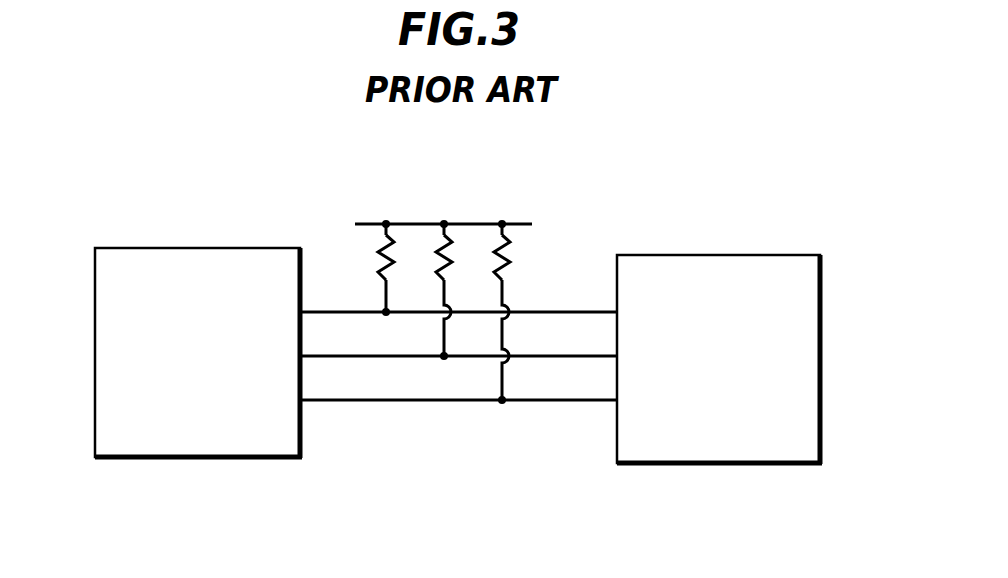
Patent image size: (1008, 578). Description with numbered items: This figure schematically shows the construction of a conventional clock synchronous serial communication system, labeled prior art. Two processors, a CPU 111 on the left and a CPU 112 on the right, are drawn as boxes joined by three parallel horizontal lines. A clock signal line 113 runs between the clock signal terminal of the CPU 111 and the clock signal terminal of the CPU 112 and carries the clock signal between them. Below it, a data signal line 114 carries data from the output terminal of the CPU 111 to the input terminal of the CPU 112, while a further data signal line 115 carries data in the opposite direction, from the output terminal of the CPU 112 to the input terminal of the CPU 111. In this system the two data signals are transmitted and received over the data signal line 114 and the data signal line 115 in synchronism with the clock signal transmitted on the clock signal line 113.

The CPU 111 is at (220, 248).
The CPU 112 is at (695, 255).
The clock signal line 113 is at (332, 310).
The data signal line 114 is at (358, 358).
The data signal line 115 is at (470, 402).